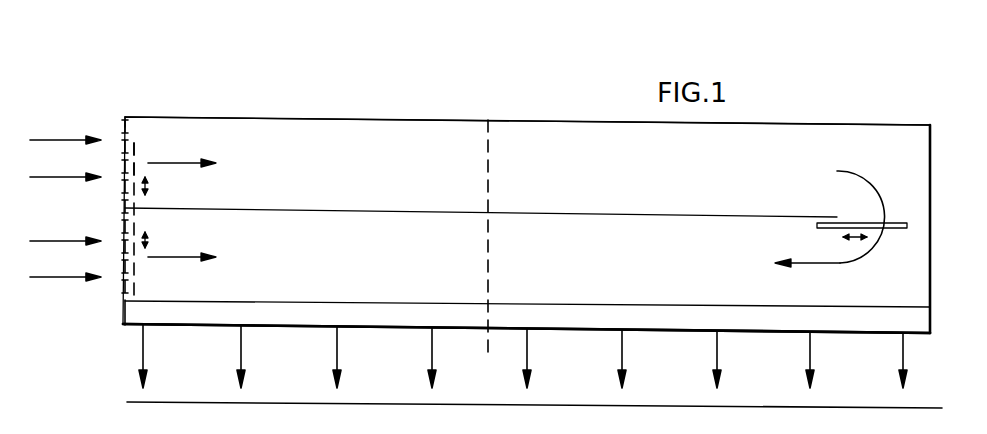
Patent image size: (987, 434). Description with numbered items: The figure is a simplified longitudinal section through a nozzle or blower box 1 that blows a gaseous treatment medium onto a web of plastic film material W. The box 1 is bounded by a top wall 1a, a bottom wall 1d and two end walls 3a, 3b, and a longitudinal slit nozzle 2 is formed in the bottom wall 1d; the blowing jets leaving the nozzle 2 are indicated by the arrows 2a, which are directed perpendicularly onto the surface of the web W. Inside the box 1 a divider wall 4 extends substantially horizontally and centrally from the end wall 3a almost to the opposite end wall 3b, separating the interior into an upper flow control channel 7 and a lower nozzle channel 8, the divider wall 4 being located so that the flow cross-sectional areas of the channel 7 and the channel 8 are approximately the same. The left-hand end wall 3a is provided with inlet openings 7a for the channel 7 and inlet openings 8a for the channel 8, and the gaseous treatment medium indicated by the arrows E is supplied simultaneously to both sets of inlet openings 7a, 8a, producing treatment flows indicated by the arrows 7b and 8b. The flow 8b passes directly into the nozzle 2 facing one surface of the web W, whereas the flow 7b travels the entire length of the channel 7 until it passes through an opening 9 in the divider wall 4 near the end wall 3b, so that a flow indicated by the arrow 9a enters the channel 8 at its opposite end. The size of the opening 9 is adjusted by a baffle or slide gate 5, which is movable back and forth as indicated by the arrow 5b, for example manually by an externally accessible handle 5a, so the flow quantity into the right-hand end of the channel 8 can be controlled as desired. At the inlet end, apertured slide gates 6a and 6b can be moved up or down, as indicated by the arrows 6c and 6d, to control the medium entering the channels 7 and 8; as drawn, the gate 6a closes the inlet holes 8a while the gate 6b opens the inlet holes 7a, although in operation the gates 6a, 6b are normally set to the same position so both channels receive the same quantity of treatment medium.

The nozzle box 1 is at (417, 85).
The top wall 1a is at (480, 120).
The bottom wall 1d is at (867, 308).
The longitudinal slit nozzle 2 is at (208, 313).
The blowing jets 2a is at (430, 347).
The end wall 3a is at (125, 120).
The end wall 3b is at (932, 168).
The divider wall 4 is at (648, 214).
The slide gate 5 is at (893, 230).
The handle 5a is at (946, 220).
The arrow 5b is at (847, 240).
The slide gate 6a is at (130, 282).
The slide gate 6b is at (135, 150).
The arrow 6c is at (147, 186).
The arrow 6d is at (147, 240).
The flow control channel 7 is at (412, 206).
The inlet openings 7a is at (122, 160).
The arrow 7b is at (190, 166).
The nozzle channel 8 is at (408, 283).
The inlet openings 8a is at (125, 215).
The arrow 8b is at (178, 262).
The opening 9 is at (917, 227).
The arrow 9a is at (866, 257).
The gaseous treatment medium E is at (64, 208).
The plastic film material W is at (328, 402).